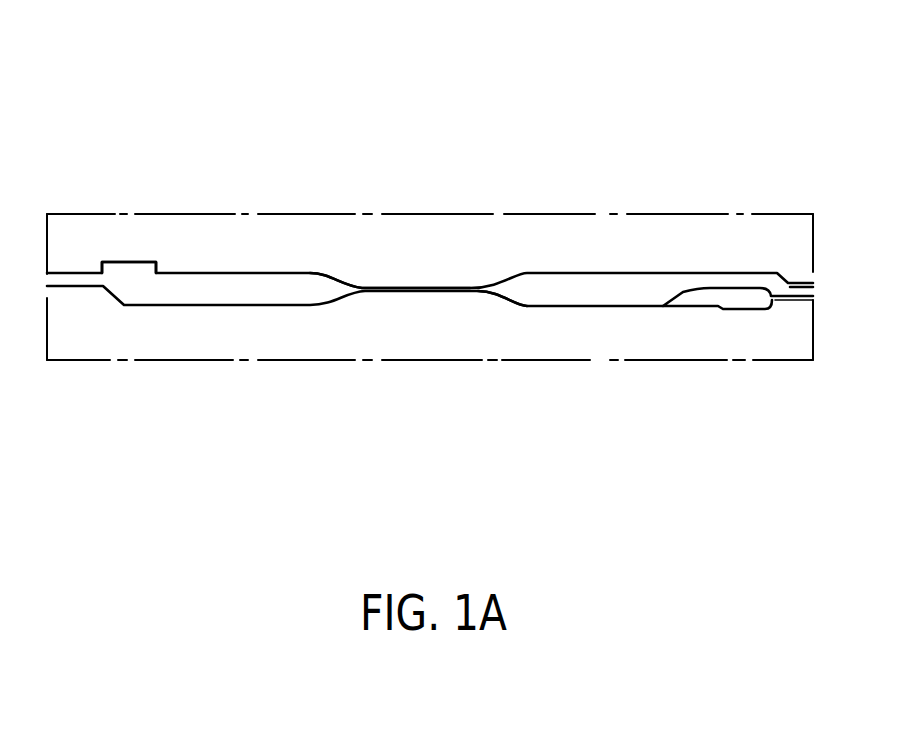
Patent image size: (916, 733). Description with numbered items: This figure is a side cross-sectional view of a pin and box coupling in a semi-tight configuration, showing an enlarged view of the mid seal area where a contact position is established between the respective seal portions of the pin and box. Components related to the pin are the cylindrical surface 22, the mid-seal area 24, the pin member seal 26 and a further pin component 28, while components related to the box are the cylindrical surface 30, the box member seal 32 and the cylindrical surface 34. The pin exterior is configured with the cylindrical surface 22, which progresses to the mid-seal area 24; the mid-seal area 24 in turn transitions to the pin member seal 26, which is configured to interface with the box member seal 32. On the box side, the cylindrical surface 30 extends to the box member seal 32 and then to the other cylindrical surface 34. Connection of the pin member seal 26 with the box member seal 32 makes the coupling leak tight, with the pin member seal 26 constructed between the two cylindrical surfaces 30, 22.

The cylindrical surface 22 is at (162, 309).
The mid-seal area 24 is at (307, 360).
The pin member seal 26 is at (497, 300).
The terminal tab 28 is at (792, 299).
The cylindrical surface 30 is at (678, 272).
The box member seal 32 is at (352, 283).
The cylindrical surface 34 is at (241, 271).